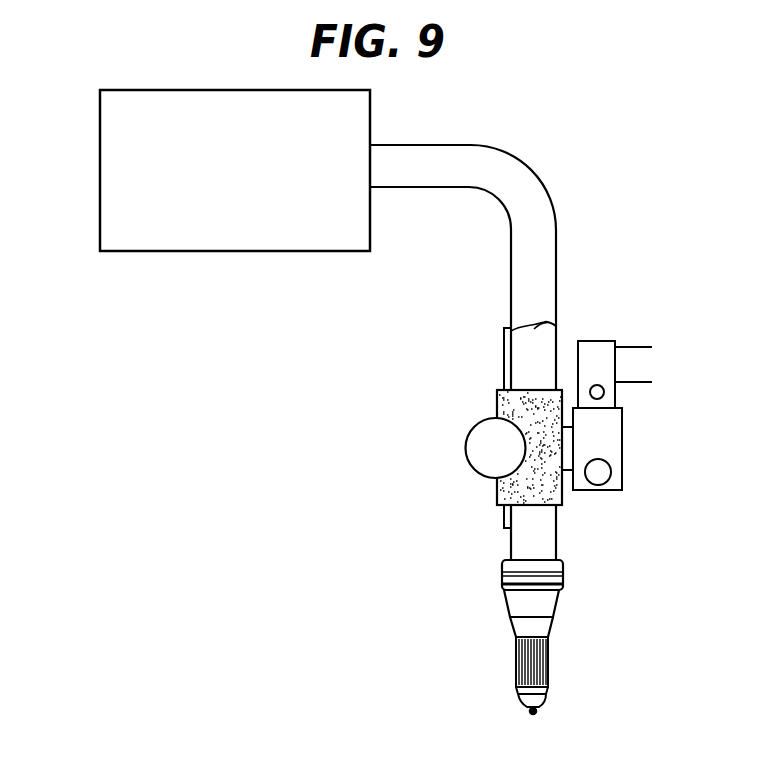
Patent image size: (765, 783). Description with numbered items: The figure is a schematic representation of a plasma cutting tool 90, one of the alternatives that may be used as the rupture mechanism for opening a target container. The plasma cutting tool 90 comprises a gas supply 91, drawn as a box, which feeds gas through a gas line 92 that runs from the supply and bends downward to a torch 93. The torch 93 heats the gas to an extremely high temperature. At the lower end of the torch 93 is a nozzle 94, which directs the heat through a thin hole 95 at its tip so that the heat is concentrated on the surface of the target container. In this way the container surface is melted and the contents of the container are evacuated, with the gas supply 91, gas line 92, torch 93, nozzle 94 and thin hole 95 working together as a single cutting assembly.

The plasma cutting tool 90 is at (290, 473).
The gas supply 91 is at (100, 142).
The gas line 92 is at (542, 186).
The torch 93 is at (557, 536).
The nozzle 94 is at (549, 649).
The thin hole 95 is at (536, 714).